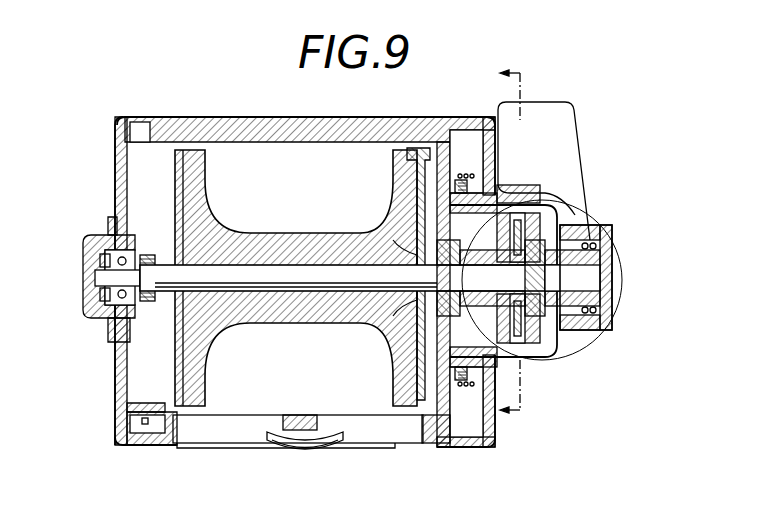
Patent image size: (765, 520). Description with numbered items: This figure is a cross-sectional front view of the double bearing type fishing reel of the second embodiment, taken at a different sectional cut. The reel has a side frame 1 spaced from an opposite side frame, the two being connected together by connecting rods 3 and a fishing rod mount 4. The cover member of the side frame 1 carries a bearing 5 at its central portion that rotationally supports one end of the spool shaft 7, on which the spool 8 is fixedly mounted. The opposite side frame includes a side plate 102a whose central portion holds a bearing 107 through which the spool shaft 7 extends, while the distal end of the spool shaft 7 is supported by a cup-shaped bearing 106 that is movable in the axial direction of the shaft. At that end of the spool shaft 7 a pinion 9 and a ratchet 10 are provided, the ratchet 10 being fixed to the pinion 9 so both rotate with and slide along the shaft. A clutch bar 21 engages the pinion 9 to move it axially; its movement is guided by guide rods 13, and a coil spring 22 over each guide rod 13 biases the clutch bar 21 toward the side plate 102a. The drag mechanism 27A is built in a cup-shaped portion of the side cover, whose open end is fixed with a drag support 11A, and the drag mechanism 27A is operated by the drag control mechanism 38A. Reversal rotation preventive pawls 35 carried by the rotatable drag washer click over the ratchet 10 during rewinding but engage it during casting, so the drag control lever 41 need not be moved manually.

The side frame 1 is at (112, 148).
The connecting rods 3 is at (221, 118).
The fishing rod mount 4 is at (228, 442).
The bearing 5 is at (128, 297).
The spool shaft 7 is at (275, 270).
The spool 8 is at (241, 240).
The pinion 9 is at (493, 262).
The ratchet 10 is at (506, 300).
The drag support 11A is at (467, 282).
The guide rods 13 is at (502, 188).
The clutch bar 21 is at (440, 322).
The coil spring 22 is at (462, 180).
The drag mechanism 27A is at (622, 229).
The reversal rotation preventive pawls 35 is at (560, 352).
The drag control mechanism 38A is at (620, 260).
The drag control lever 41 is at (560, 125).
The side plate 102a is at (430, 170).
The cup-shaped bearing 106 is at (582, 338).
The bearing 107 is at (418, 256).